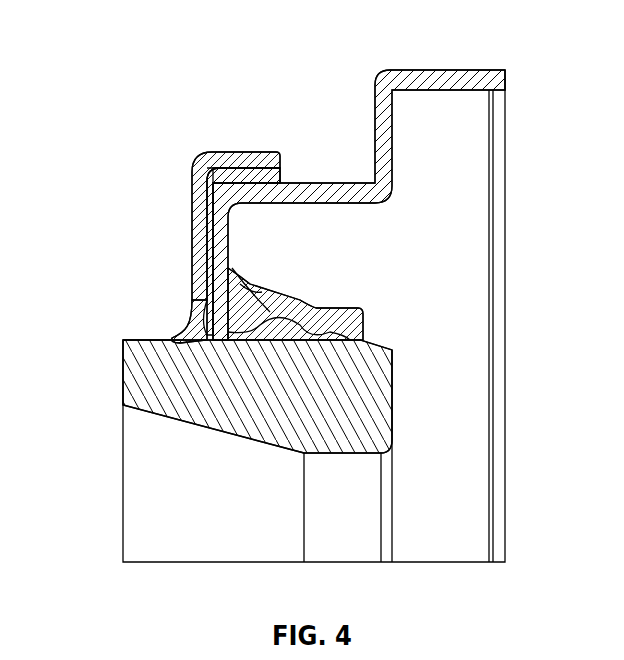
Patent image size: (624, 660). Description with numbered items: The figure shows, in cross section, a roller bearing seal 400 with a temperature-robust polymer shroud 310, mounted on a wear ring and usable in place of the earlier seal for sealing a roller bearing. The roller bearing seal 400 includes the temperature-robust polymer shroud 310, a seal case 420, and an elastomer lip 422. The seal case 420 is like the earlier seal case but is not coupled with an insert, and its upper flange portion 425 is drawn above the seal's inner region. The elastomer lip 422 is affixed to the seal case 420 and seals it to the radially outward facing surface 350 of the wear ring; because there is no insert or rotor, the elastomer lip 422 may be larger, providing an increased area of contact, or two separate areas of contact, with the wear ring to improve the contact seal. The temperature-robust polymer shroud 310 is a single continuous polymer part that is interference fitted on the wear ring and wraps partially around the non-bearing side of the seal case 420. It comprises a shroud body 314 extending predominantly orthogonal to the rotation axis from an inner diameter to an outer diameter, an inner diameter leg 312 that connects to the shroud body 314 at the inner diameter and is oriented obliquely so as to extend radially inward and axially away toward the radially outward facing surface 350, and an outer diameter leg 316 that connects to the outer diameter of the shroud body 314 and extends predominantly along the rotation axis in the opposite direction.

The roller bearing seal 400 is at (255, 82).
The seal case 420 is at (337, 183).
The top flange portion of cup 425 is at (248, 168).
The elastomer lip 422 is at (283, 303).
The temperature-robust polymer shroud 310 is at (160, 185).
The outer diameter leg 316 is at (213, 160).
The shroud body 314 is at (195, 228).
The inner diameter leg 312 is at (180, 335).
The radially outward facing surface 350 is at (140, 340).